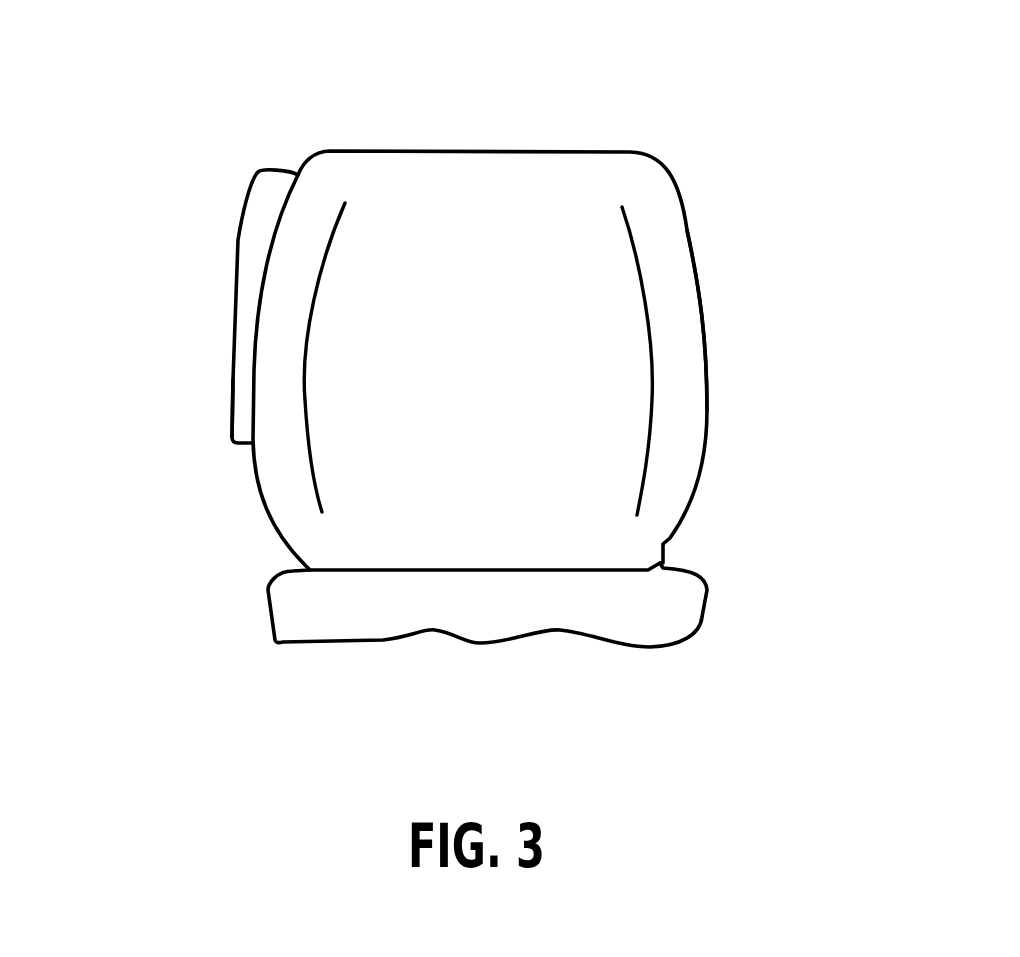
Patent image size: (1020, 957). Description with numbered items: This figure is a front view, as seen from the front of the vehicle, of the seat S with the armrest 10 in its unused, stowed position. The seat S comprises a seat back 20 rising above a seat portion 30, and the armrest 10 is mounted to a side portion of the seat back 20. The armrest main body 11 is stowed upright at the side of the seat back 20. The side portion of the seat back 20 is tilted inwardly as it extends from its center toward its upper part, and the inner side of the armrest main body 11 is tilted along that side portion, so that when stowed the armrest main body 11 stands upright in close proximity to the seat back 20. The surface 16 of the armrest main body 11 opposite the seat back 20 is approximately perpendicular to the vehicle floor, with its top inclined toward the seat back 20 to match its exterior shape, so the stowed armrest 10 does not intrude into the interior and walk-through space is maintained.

The armrest 10 is at (202, 204).
The armrest main body 11 is at (240, 255).
The surface 16 is at (232, 345).
The seat back 20 is at (563, 160).
The seat portion 30 is at (695, 622).
The seat S is at (717, 220).